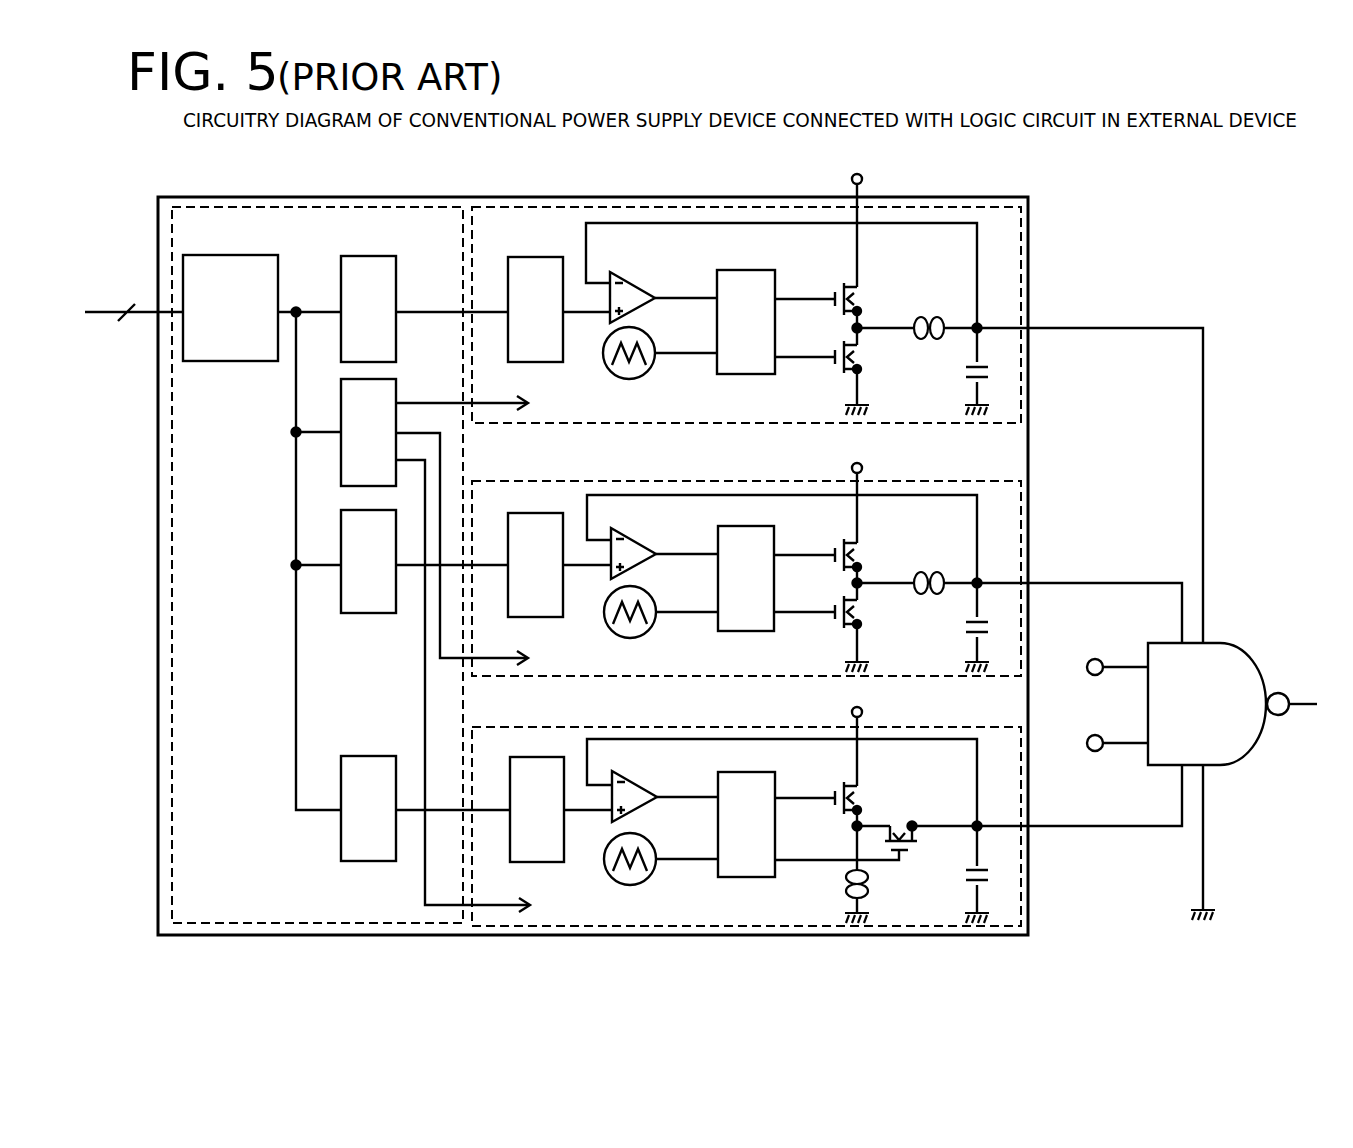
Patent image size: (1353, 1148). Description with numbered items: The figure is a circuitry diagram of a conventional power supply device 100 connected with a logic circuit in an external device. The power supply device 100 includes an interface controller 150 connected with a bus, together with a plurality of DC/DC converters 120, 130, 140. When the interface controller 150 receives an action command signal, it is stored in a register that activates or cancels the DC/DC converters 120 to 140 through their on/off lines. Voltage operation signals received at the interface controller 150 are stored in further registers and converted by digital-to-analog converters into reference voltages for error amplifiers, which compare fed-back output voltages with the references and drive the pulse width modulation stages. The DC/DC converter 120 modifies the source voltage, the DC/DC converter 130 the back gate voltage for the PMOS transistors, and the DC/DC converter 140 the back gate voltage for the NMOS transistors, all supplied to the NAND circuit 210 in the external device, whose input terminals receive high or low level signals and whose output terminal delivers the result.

The power supply device 100 is at (953, 188).
The DC/DC converter 120 is at (1022, 232).
The DC/DC converter 130 is at (1024, 491).
The DC/DC converter 140 is at (1022, 881).
The interface controller 150 is at (226, 255).
The NAND circuit 210 is at (1215, 637).